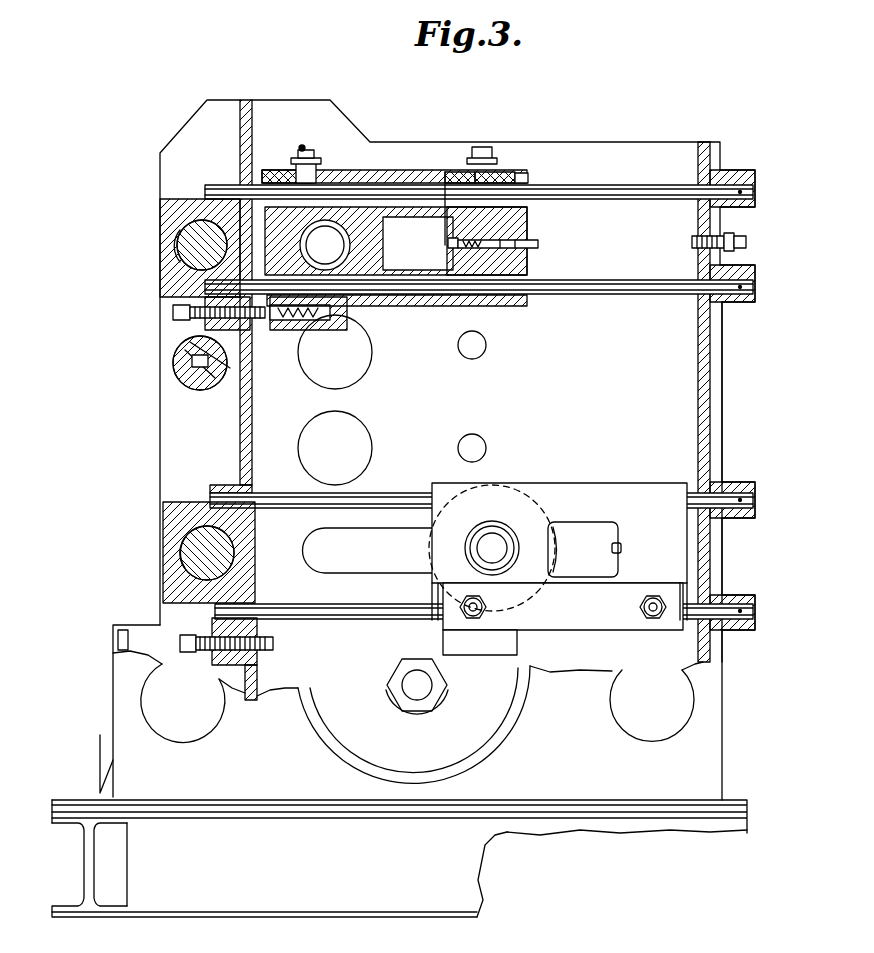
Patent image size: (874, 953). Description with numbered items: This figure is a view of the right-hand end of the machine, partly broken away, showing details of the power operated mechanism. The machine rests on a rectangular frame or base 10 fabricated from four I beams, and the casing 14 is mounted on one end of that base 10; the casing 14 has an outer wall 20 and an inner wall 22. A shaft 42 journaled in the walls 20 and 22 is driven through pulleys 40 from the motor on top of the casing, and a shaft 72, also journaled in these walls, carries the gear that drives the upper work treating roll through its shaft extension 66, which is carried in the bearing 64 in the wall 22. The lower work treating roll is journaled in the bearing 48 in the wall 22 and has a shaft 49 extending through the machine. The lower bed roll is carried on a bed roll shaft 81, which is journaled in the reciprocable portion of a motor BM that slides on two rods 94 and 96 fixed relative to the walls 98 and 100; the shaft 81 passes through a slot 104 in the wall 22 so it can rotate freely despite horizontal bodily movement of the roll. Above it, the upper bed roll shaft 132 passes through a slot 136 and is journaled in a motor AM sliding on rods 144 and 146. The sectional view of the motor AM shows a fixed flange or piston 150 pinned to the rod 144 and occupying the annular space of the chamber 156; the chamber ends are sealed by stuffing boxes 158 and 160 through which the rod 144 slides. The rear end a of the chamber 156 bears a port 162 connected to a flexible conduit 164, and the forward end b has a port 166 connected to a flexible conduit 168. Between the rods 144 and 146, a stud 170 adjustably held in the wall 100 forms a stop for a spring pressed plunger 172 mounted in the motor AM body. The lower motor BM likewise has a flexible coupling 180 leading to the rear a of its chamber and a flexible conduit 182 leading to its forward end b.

The rectangular frame or base 10 is at (228, 908).
The casing 14 is at (782, 685).
The outer wall 20 is at (728, 780).
The inner wall 22 is at (690, 352).
The pulleys 40 is at (528, 718).
The shaft 42 is at (432, 695).
The bearing 48 is at (163, 537).
The shaft 49 is at (185, 555).
The bearing 64 is at (160, 220).
The shaft extension 66 is at (185, 250).
The shaft 72 is at (205, 385).
The bed roll shaft 81 is at (490, 556).
The rod 94 is at (406, 492).
The rod 96 is at (365, 619).
The wall 98 is at (252, 404).
The wall 100 is at (715, 410).
The slot 104 is at (320, 560).
The shaft 132 is at (383, 243).
The slot 136 is at (428, 272).
The rod 144 is at (642, 190).
The rod 146 is at (666, 288).
The fixed flange or piston 150 is at (530, 225).
The chamber 156 is at (460, 210).
The stuffing box 158 is at (288, 183).
The stuffing box 160 is at (525, 178).
The port 162 is at (495, 183).
The flexible conduit 164 is at (483, 160).
The port 166 is at (318, 183).
The flexible conduit 168 is at (305, 125).
The stud 170 is at (745, 248).
The spring pressed plunger 172 is at (540, 245).
The flexible coupling 180 is at (640, 607).
The flexible conduit 182 is at (482, 612).
The reciprocable motor AM is at (510, 306).
The reciprocable motor BM is at (615, 483).
The rear end of chamber a is at (448, 125).
The forward end of chamber b is at (410, 168).